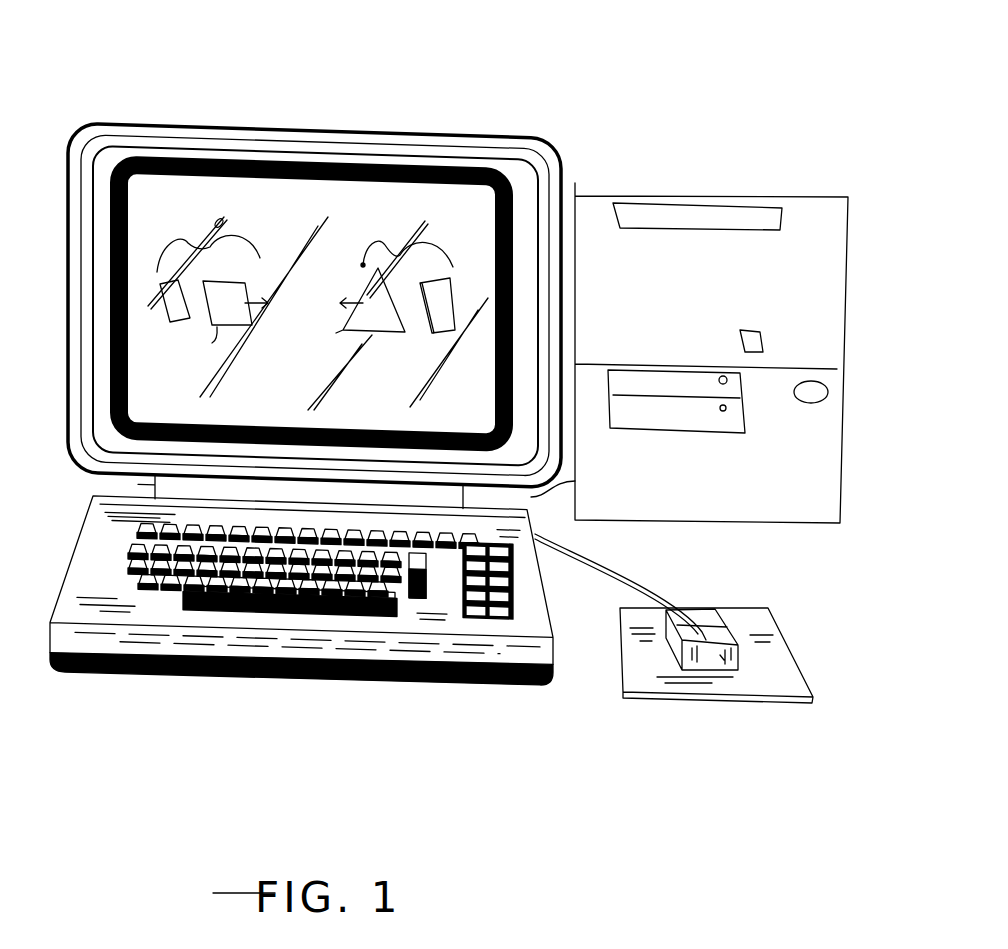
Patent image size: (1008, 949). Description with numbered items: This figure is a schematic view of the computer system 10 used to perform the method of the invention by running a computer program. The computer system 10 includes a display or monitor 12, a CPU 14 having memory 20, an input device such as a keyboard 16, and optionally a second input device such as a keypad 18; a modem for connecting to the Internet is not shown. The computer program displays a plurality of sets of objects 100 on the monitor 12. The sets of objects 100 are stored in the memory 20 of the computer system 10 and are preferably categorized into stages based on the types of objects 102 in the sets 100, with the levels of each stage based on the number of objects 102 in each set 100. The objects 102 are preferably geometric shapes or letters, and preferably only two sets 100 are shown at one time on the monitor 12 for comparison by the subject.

The computer system 10 is at (467, 73).
The monitor 12 is at (513, 178).
The CPU 14 is at (822, 223).
The keyboard 16 is at (440, 657).
The keypad 18 is at (737, 655).
The memory 20 is at (763, 342).
The sets of objects 100 is at (301, 269).
The objects 102 is at (206, 325).